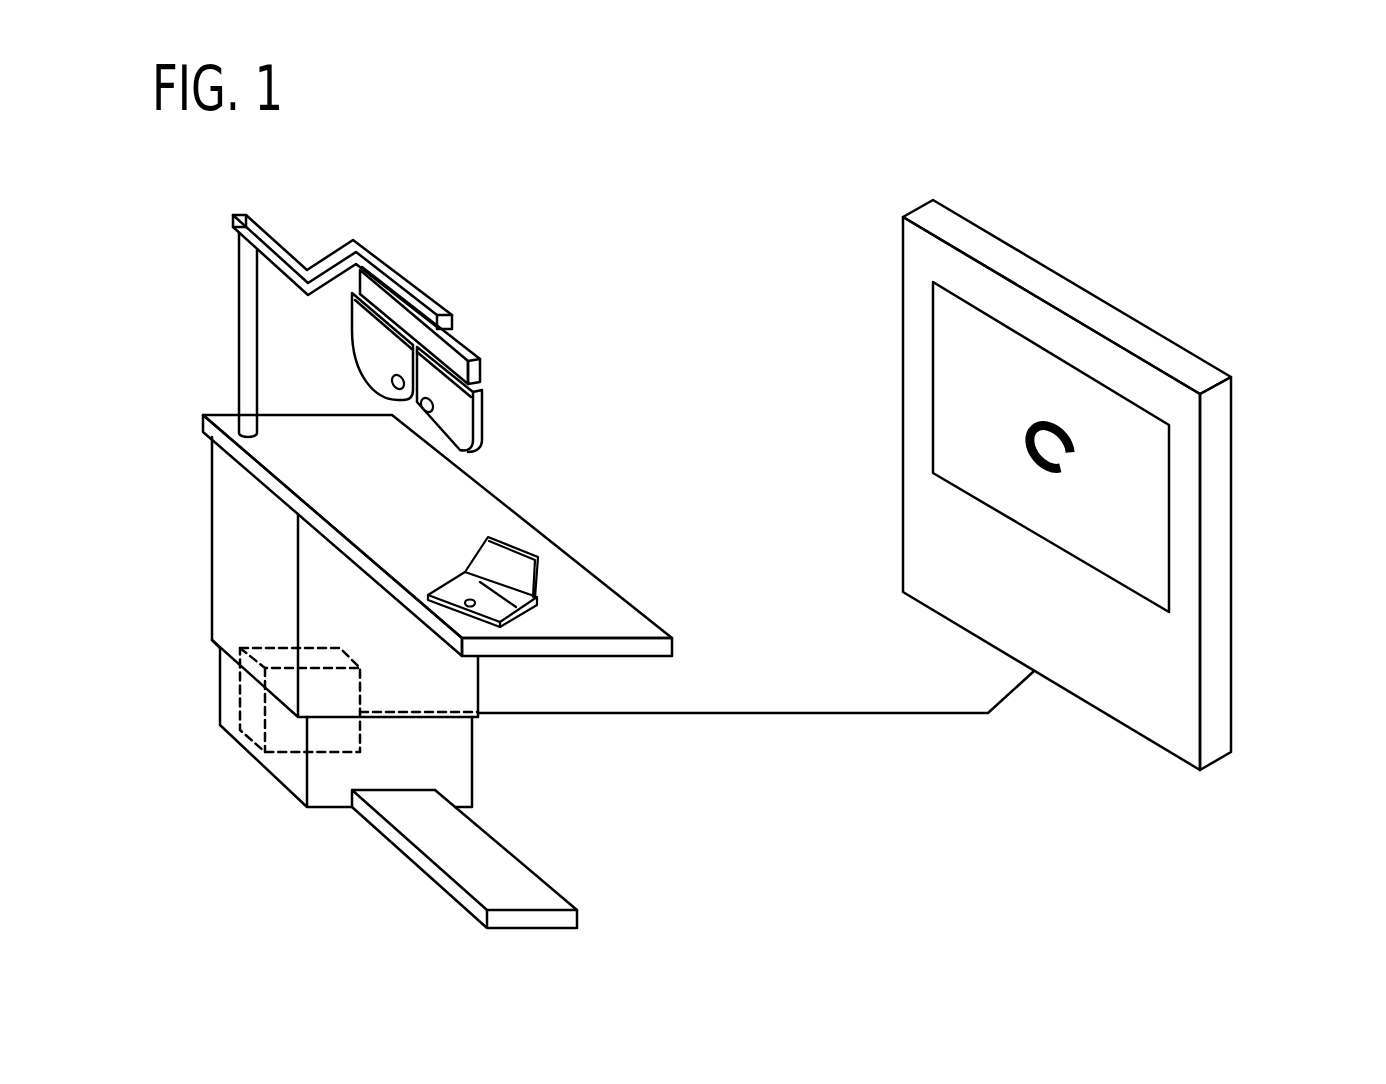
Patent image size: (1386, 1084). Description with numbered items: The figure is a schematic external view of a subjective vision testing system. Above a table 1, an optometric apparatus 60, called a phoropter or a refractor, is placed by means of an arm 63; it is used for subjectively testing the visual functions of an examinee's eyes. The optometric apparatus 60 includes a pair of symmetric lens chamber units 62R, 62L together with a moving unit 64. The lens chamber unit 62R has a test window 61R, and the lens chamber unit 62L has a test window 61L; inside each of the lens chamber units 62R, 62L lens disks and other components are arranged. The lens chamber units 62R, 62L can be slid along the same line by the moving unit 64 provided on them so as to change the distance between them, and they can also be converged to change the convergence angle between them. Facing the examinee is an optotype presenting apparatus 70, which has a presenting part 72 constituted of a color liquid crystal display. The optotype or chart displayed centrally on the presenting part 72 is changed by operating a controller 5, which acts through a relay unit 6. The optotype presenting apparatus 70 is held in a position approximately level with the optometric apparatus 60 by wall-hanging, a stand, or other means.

The table 1 is at (225, 558).
The controller 5 is at (455, 588).
The relay unit 6 is at (240, 698).
The optometric apparatus 60 is at (432, 205).
The test window 61L is at (392, 382).
The test window 61R is at (426, 413).
The lens chamber unit 62L is at (360, 318).
The lens chamber unit 62R is at (483, 422).
The arm 63 is at (407, 273).
The moving unit 64 is at (462, 343).
The optotype presenting apparatus 70 is at (1225, 330).
The presenting part 72 is at (973, 375).